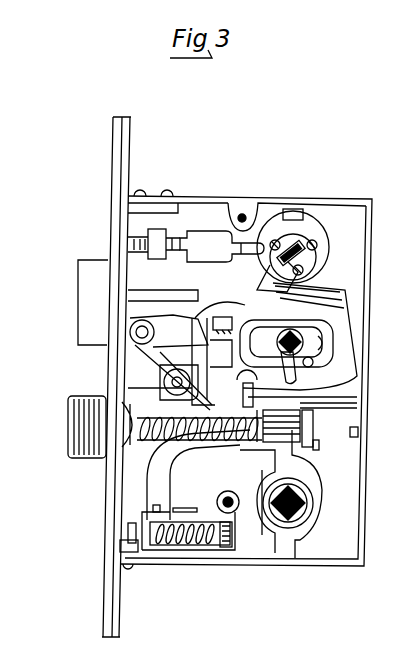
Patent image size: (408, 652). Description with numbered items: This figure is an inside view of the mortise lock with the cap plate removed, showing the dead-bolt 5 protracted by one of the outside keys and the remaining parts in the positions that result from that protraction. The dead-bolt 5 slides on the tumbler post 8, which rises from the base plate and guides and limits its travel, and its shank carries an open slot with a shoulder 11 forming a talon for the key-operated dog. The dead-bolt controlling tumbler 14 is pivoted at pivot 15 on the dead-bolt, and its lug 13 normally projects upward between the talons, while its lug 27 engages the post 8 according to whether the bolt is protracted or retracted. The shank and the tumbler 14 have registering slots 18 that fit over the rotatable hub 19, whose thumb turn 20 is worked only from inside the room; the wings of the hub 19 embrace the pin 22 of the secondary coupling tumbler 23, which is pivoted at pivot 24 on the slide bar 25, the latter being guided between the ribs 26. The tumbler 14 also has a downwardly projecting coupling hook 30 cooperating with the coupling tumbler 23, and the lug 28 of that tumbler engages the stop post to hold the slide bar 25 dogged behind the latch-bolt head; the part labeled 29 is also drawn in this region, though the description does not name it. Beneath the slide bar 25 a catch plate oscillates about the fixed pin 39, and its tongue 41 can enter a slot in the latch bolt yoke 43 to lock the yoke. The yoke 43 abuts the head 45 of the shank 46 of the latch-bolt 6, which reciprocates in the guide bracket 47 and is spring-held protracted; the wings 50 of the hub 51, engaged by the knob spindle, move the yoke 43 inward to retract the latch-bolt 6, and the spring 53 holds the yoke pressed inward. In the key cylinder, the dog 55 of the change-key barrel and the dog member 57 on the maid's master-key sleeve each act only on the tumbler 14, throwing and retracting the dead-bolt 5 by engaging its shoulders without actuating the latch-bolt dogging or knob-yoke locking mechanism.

The dead-bolt 5 is at (90, 274).
The latch-bolt 6 is at (83, 422).
The tumbler post 8 is at (212, 318).
The shoulder 11 is at (262, 298).
The lug 13 is at (302, 292).
The dead-bolt controlling tumbler 14 is at (238, 303).
The pivot 15 is at (133, 330).
The registering slots 18 is at (312, 318).
The rotatable hub 19 is at (330, 348).
The thumb turn 20 is at (345, 366).
The pin 22 is at (340, 382).
The secondary coupling tumbler 23 is at (318, 400).
The pivot 24 is at (163, 382).
The slide bar 25 is at (318, 406).
The ribs 26 is at (165, 355).
The lug 27 is at (195, 326).
The lug 28 is at (285, 357).
The block 29 is at (303, 395).
The coupling hook 30 is at (180, 388).
The fixed pin 39 is at (150, 445).
The tongue 41 is at (170, 495).
The latch bolt yoke 43 is at (160, 500).
The head 45 is at (319, 450).
The shank 46 is at (313, 432).
The guide bracket 47 is at (297, 446).
The wings 50 is at (267, 537).
The hub 51 is at (298, 530).
The spring 53 is at (188, 542).
The dog 55 is at (263, 222).
The dog member 57 is at (292, 222).